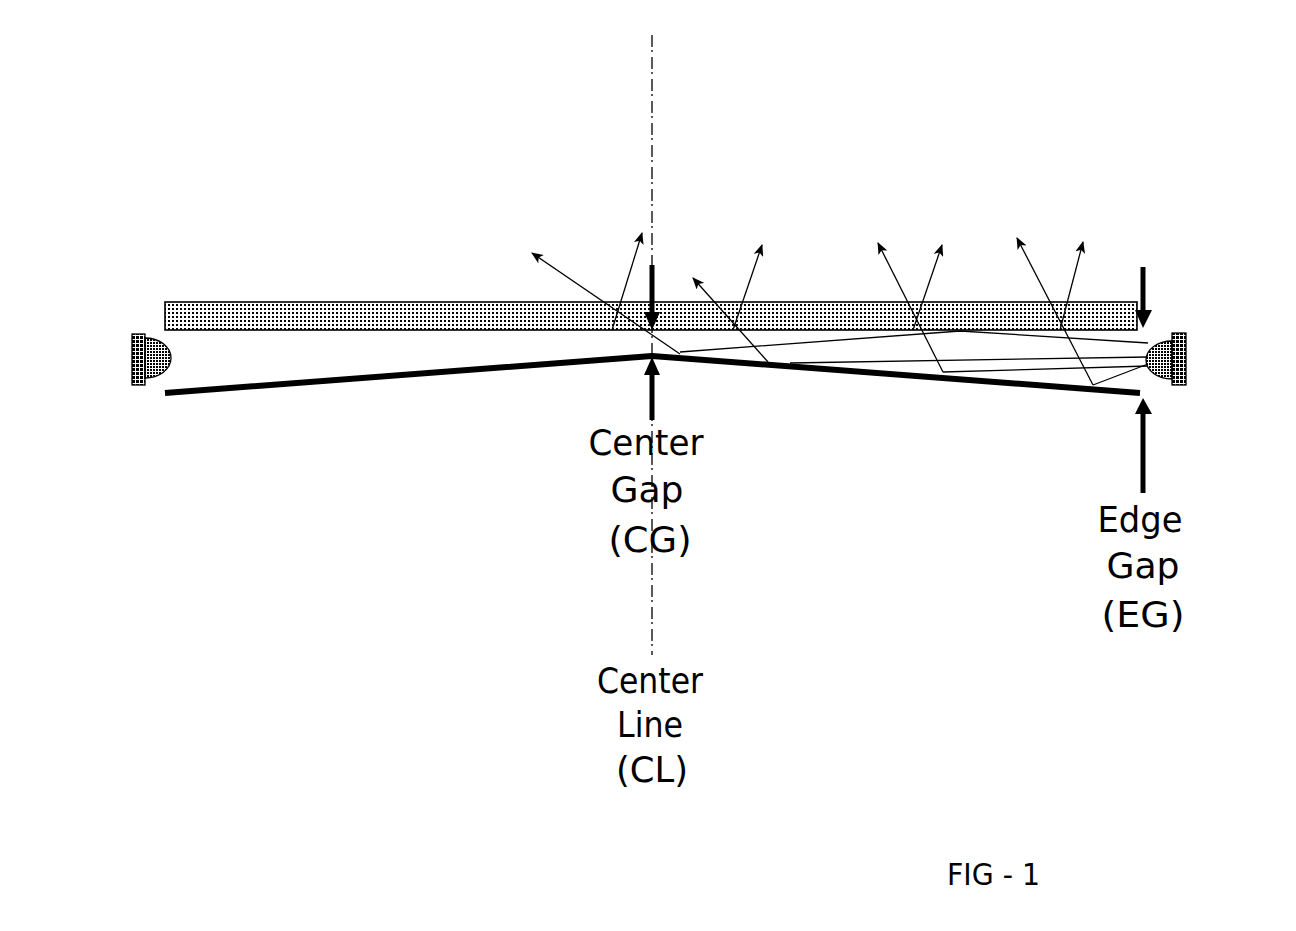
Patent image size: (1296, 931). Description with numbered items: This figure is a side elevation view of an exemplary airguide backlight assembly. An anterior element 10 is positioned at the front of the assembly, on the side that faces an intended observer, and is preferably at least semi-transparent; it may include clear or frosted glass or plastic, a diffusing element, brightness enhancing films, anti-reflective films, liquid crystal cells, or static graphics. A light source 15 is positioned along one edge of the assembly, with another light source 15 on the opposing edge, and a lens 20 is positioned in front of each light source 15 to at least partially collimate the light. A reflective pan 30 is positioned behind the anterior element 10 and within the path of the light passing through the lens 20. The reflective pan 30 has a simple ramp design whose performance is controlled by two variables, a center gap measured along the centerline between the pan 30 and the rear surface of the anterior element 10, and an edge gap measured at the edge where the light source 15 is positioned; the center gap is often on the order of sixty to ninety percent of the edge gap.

The anterior element 10 is at (472, 302).
The light source 15 is at (132, 383).
The lens 20 is at (135, 332).
The reflective pan 30 is at (337, 382).